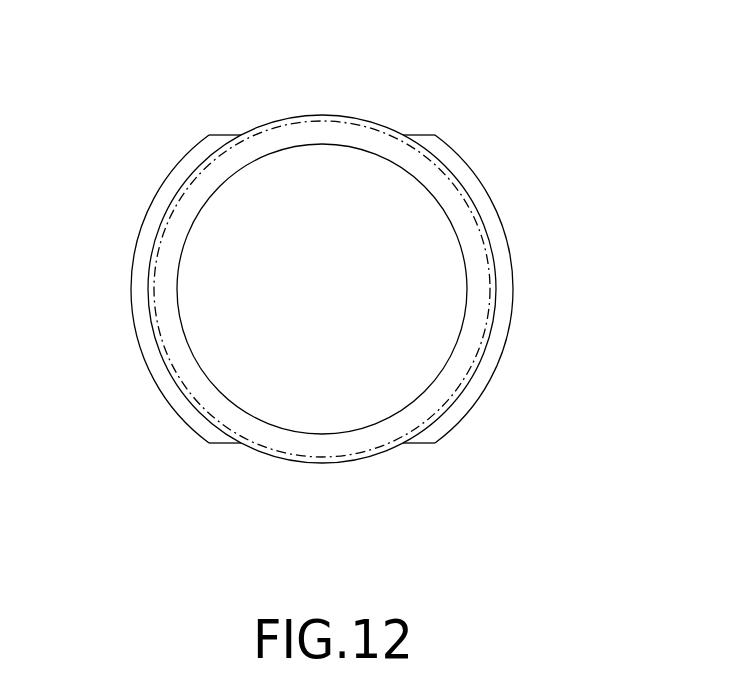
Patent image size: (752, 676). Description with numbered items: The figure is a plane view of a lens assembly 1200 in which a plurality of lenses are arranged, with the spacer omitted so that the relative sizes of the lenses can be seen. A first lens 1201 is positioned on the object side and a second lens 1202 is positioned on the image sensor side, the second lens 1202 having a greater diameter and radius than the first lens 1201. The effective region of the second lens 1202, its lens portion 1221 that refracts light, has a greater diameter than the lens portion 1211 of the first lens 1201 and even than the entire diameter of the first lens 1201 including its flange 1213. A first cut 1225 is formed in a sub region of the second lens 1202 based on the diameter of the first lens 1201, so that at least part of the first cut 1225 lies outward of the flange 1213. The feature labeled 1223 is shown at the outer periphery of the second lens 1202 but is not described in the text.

The lens assembly 1200 is at (339, 290).
The first lens 1201 is at (352, 290).
The second lens 1202 is at (339, 290).
The lens portion 1211 is at (248, 226).
The flange 1213 is at (322, 115).
The lens portion 1221 is at (333, 458).
The lug outer surface 1223 is at (158, 395).
The first cut 1225 is at (228, 135).